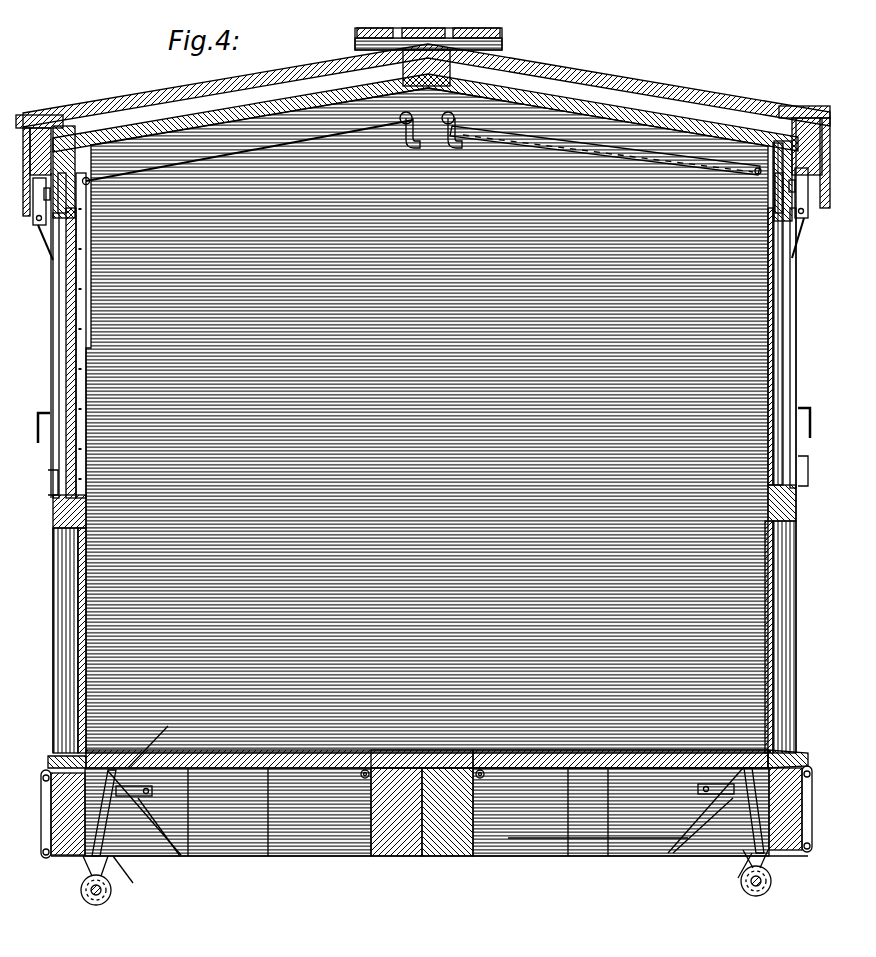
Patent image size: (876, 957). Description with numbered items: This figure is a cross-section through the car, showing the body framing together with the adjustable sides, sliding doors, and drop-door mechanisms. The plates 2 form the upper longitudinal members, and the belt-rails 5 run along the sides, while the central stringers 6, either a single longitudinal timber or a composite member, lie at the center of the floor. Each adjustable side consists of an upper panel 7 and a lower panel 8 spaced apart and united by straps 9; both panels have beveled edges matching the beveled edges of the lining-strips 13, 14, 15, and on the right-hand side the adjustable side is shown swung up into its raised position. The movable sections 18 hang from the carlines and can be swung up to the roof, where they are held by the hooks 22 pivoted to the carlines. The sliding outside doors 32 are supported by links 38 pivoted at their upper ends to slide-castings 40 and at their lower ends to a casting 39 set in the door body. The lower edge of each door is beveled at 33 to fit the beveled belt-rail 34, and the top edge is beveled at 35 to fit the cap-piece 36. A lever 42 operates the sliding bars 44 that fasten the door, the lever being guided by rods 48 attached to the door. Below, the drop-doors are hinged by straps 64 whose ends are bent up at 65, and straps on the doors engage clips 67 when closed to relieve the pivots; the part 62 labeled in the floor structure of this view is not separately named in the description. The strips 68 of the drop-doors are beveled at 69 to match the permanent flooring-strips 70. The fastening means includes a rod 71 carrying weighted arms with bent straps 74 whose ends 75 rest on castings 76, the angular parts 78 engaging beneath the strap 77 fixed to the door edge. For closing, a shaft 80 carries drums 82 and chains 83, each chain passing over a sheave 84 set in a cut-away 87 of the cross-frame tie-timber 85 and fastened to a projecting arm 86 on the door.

The plates 2 is at (50, 118).
The belt-rails 5 is at (780, 495).
The central stringers 6 is at (422, 824).
The upper panel 7 is at (62, 583).
The lower panel 8 is at (60, 660).
The straps 9 is at (72, 612).
The lining-strip 13 is at (510, 128).
The lining-strip 14 is at (768, 620).
The lining-strip 15 is at (770, 546).
The movable sections 18 is at (80, 428).
The hooks 22 is at (440, 110).
The sliding outside doors 32 is at (55, 308).
The beveled lower edge of door 33 is at (42, 474).
The belt-rail 34 is at (50, 505).
The beveled top edge of door 35 is at (40, 240).
The cap-piece 36 is at (32, 217).
The links 38 is at (790, 232).
The casting 39 is at (52, 258).
The slide-castings 40 is at (797, 206).
The lever 42 is at (798, 460).
The sliding bars 44 is at (70, 178).
The rods 48 is at (42, 405).
The floor beam 62 is at (295, 770).
The straps of the hinges 64 is at (248, 770).
The bent-up ends of straps 65 is at (70, 750).
The clips 67 is at (475, 772).
The strips of the drop-doors 68 is at (580, 742).
The beveled edges of drop-door strips 69 is at (478, 770).
The longitudinal permanent flooring-strips 70 is at (408, 742).
The rod 71 is at (36, 850).
The bent straps 74 is at (740, 850).
The ends of bent straps 75 is at (738, 862).
The castings 76 is at (110, 858).
The strap 77 is at (102, 758).
The angular parts 78 is at (740, 758).
The shaft 80 is at (94, 885).
The drums 82 is at (87, 897).
The chains 83 is at (75, 870).
The sheave 84 is at (158, 740).
The cross-frame tie-timber 85 is at (598, 823).
The projecting arm 86 is at (120, 830).
The cut-away portion 87 is at (144, 786).